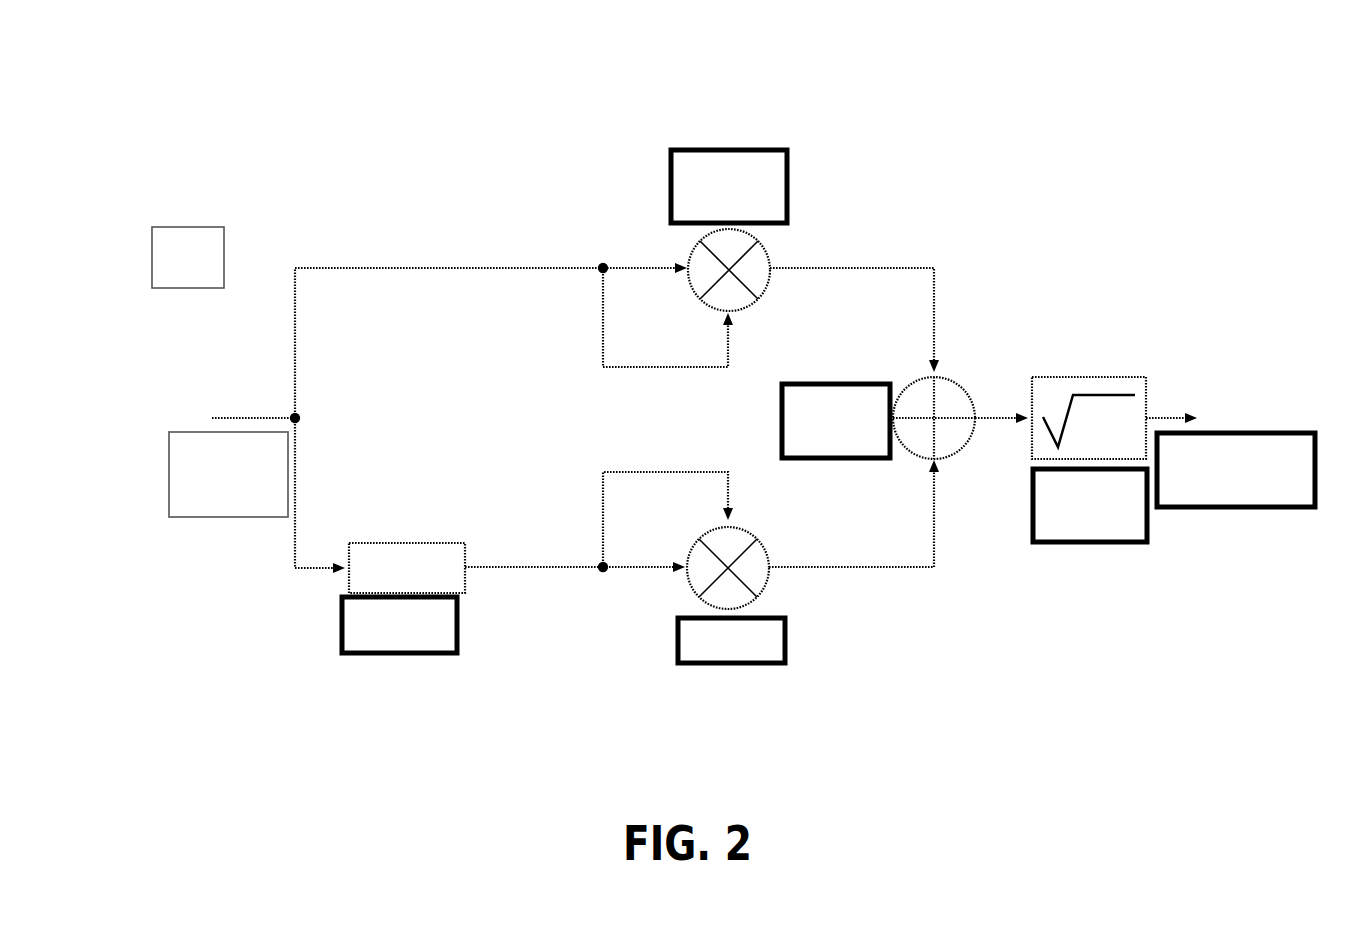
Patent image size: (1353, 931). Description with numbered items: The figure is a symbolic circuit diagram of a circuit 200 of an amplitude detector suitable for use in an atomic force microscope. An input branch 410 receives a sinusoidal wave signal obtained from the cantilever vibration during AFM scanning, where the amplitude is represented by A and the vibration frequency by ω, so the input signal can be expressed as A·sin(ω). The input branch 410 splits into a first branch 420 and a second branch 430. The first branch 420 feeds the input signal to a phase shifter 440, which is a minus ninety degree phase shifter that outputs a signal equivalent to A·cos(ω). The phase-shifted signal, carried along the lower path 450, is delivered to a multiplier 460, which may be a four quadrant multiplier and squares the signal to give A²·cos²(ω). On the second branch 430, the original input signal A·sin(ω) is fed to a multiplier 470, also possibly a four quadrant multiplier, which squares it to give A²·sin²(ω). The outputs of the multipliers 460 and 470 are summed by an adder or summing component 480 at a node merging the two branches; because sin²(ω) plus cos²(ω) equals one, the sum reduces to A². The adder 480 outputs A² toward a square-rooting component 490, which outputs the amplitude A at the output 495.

The circuit 200 is at (633, 132).
The input branch 410 is at (220, 433).
The first branch 420 is at (295, 570).
The second branch 430 is at (297, 268).
The phase shifter 440 is at (412, 600).
The second signal branch 450 is at (642, 578).
The multiplier 460 is at (762, 603).
The multiplier 470 is at (770, 245).
The adder or summing component 480 is at (955, 375).
The square-rooting component 490 is at (1087, 370).
The output 495 is at (1198, 408).